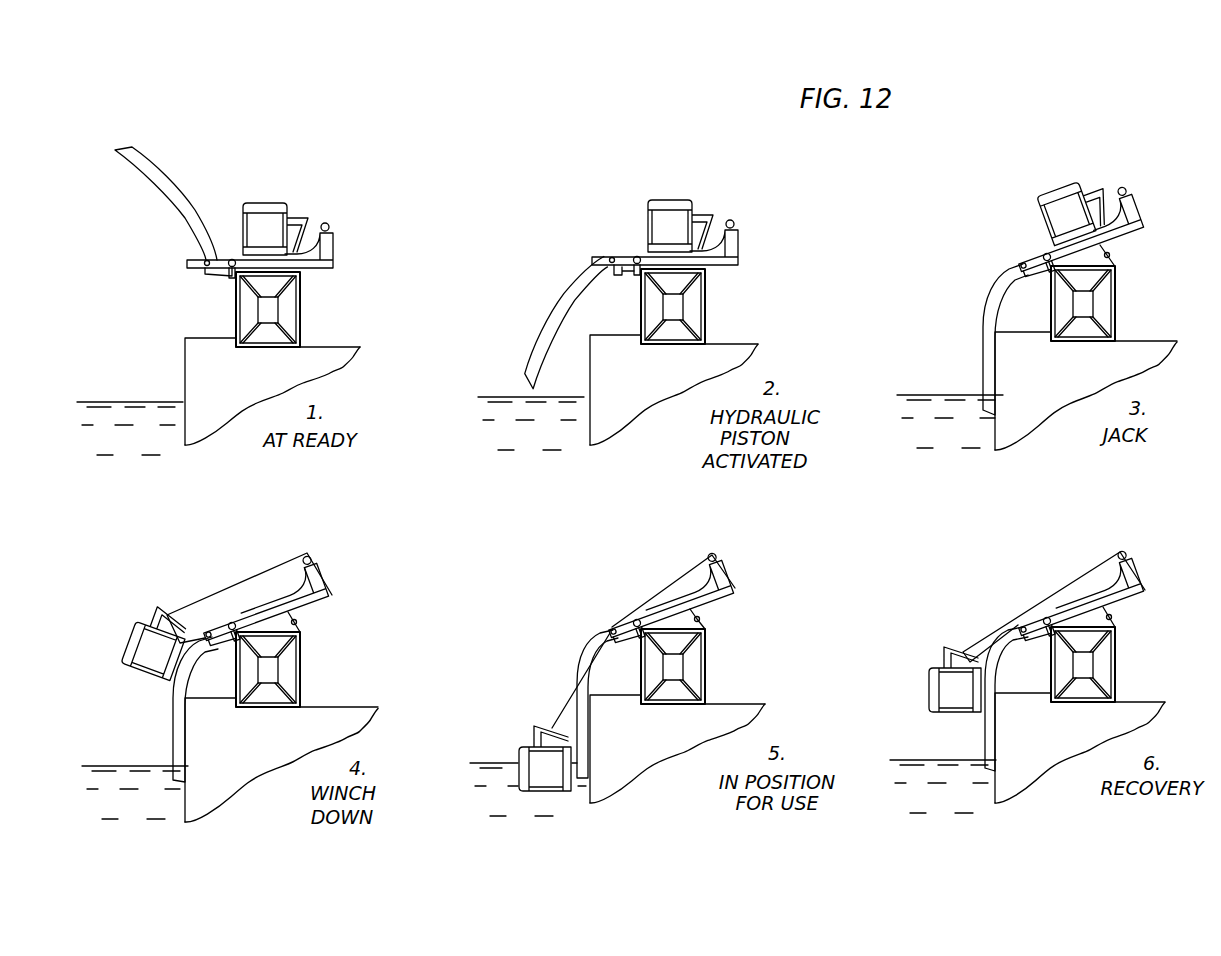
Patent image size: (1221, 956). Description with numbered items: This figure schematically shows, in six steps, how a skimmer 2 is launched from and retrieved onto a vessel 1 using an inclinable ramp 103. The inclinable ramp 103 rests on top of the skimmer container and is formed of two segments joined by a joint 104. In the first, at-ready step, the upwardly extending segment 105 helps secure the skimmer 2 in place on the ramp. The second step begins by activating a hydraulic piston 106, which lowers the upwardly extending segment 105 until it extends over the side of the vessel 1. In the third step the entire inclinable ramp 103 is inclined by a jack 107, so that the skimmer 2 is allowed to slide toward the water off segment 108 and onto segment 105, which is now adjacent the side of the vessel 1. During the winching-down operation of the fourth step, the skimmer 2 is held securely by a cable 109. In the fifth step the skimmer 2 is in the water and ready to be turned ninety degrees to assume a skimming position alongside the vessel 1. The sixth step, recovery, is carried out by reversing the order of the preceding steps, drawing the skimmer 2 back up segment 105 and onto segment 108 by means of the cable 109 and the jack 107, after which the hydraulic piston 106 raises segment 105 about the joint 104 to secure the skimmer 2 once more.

The vessel 1 is at (251, 391).
The skimmer 2 is at (607, 468).
The inclinable ramp 103 is at (696, 446).
The joint 104 is at (179, 279).
The upwardly extending segment 105 is at (570, 456).
The hydraulic piston 106 is at (609, 290).
The jack 107 is at (735, 449).
The segment 108 is at (273, 592).
The cable 109 is at (656, 596).